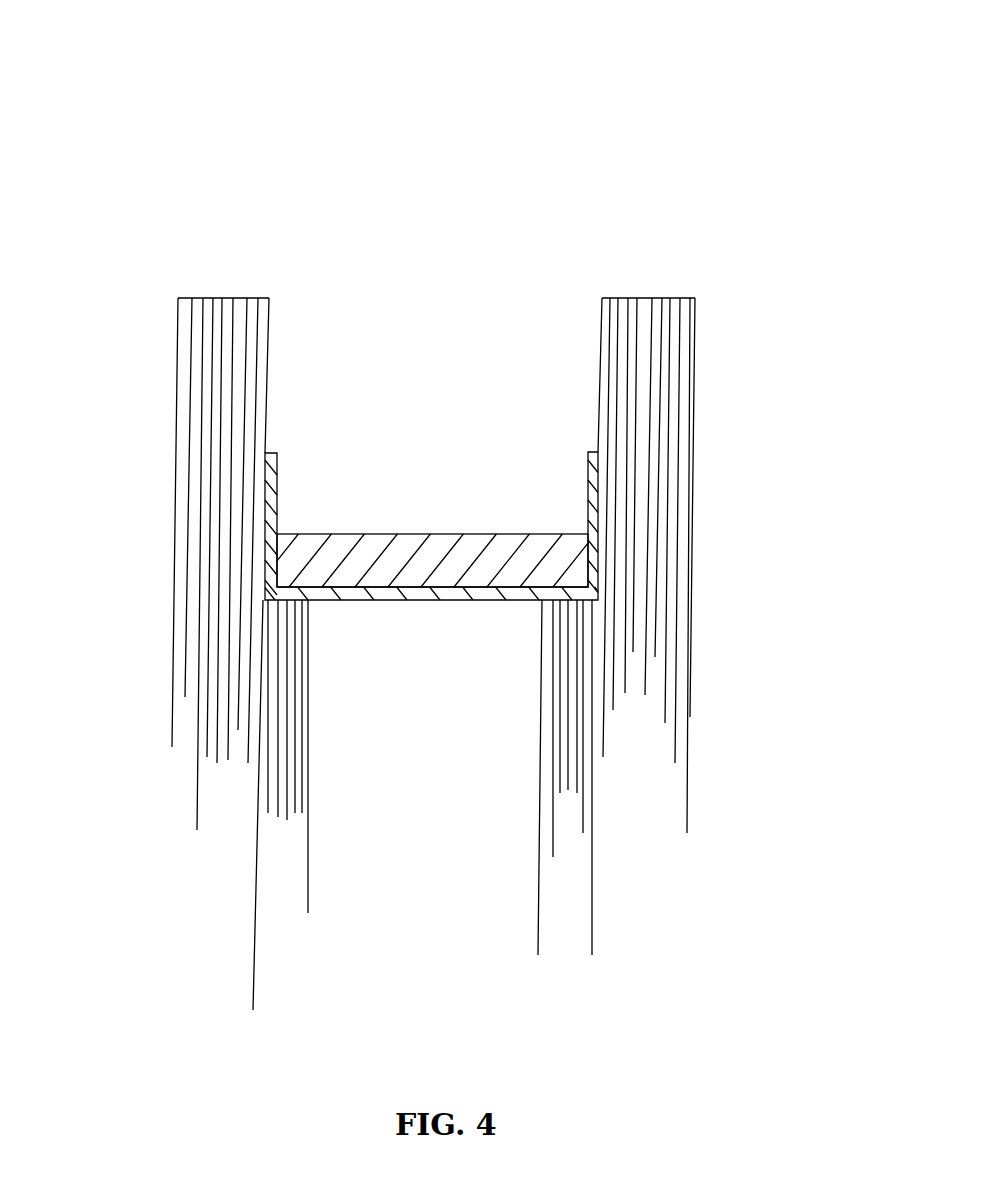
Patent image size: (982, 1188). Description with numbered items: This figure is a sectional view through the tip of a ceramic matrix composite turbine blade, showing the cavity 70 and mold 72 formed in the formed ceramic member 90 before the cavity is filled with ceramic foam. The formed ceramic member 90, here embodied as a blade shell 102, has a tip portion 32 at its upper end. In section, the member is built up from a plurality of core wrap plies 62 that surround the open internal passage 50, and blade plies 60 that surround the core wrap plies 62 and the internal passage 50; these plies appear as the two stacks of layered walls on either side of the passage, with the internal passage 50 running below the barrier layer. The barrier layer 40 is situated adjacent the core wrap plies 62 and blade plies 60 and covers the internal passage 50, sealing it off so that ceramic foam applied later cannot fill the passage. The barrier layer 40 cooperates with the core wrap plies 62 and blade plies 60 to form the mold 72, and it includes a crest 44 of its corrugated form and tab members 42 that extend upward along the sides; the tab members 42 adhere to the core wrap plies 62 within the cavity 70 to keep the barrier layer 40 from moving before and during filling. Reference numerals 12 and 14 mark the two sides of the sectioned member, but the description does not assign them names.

The first wall 12 is at (240, 295).
The second wall 14 is at (673, 296).
The tip portion 32 is at (380, 163).
The barrier layer 40 is at (278, 503).
The tab member 42 is at (278, 467).
The crest 44 is at (493, 535).
The internal passage 50 is at (449, 729).
The blade plies 60 is at (198, 298).
The core wrap plies 62 is at (270, 813).
The cavity 70 is at (468, 245).
The mold 72 is at (453, 402).
The formed ceramic member 90 is at (623, 167).
The blade shell 102 is at (325, 283).